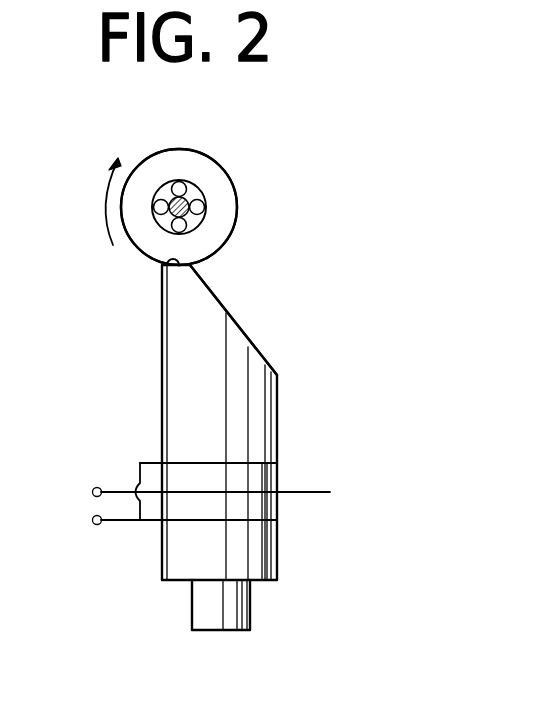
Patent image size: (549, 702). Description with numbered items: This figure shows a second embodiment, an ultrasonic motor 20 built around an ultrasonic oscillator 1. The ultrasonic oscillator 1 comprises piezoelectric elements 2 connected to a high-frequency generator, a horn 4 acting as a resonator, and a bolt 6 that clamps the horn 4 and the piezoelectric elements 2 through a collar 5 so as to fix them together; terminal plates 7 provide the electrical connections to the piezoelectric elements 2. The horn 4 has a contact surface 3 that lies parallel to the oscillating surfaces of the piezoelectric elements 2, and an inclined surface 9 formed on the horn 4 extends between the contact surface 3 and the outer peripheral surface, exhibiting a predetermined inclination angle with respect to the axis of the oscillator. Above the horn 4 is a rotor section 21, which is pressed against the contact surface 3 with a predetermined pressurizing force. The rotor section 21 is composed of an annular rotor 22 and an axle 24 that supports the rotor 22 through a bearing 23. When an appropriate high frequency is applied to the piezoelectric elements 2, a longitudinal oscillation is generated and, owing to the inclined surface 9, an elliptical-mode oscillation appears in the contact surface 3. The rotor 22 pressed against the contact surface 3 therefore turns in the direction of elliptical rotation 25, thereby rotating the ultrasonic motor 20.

The ultrasonic oscillator 1 is at (160, 398).
The piezoelectric elements 2 is at (261, 470).
The contact surface 3 is at (160, 257).
The horn 4 is at (173, 340).
The collar 5 is at (185, 546).
The bolt 6 is at (246, 612).
The terminal plates 7 is at (315, 492).
The inclined surface 9 is at (243, 332).
The ultrasonic motor 20 is at (352, 271).
The rotor section 21 is at (233, 163).
The annular rotor 22 is at (232, 188).
The bearing 23 is at (201, 210).
The axle 24 is at (165, 185).
The direction of elliptical rotation 25 is at (104, 204).